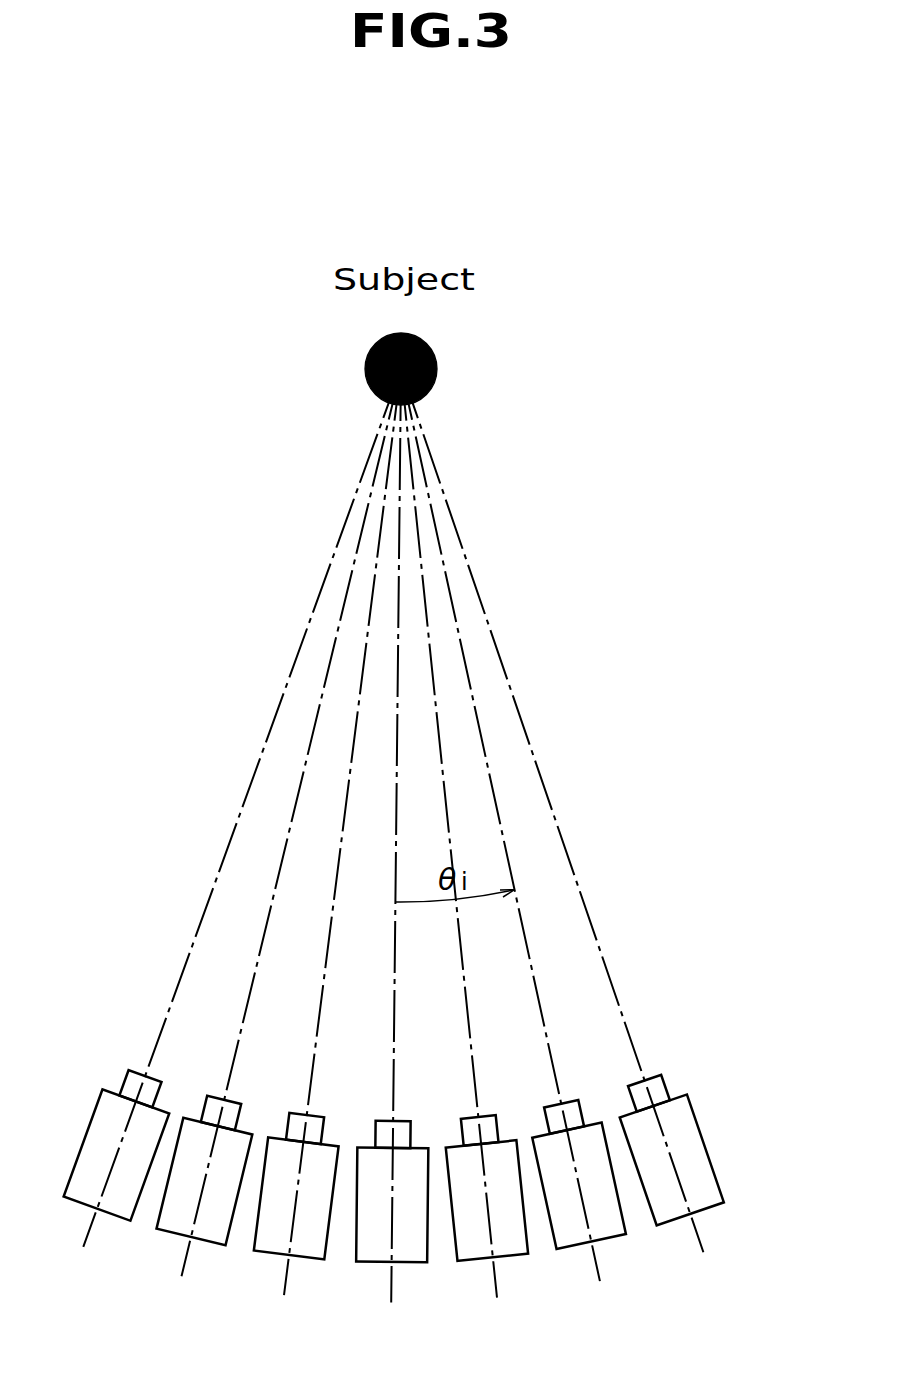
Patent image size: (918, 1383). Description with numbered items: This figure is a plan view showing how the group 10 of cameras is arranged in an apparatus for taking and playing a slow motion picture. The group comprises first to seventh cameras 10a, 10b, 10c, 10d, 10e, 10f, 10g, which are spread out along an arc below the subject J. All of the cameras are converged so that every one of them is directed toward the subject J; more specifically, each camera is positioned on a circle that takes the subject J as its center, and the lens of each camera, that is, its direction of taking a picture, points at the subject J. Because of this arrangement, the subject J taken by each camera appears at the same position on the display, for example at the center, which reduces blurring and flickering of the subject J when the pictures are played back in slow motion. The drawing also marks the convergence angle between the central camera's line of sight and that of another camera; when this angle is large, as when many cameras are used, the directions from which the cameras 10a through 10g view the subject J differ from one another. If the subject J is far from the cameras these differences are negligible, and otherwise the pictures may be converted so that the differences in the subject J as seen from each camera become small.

The subject J is at (437, 371).
The group of cameras 10 is at (444, 1208).
The first camera 10a is at (110, 1218).
The second camera 10b is at (205, 1245).
The third camera 10c is at (298, 1262).
The fourth camera 10d is at (410, 1267).
The fifth camera 10e is at (508, 1258).
The sixth camera 10f is at (612, 1240).
The seventh camera 10g is at (712, 1208).